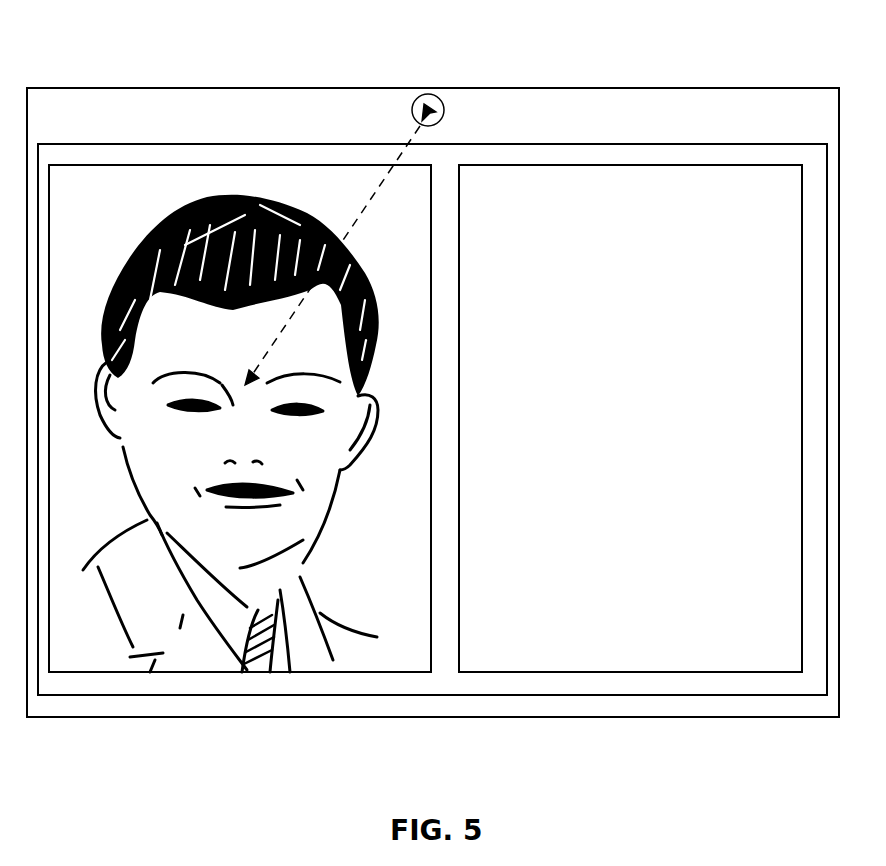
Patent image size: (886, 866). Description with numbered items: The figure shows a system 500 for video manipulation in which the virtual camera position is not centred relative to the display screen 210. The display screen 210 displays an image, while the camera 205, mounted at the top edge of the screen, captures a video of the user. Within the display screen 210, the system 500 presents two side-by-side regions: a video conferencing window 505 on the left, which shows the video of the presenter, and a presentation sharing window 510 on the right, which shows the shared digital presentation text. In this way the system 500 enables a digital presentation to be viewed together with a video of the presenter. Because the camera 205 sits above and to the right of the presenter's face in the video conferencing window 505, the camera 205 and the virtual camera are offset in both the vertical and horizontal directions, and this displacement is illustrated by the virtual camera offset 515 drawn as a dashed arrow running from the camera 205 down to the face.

The system 500 is at (212, 38).
The camera 205 is at (428, 94).
The display screen 210 is at (638, 695).
The video conferencing window 505 is at (292, 672).
The presentation sharing window 510 is at (630, 418).
The virtual camera offset 515 is at (366, 207).